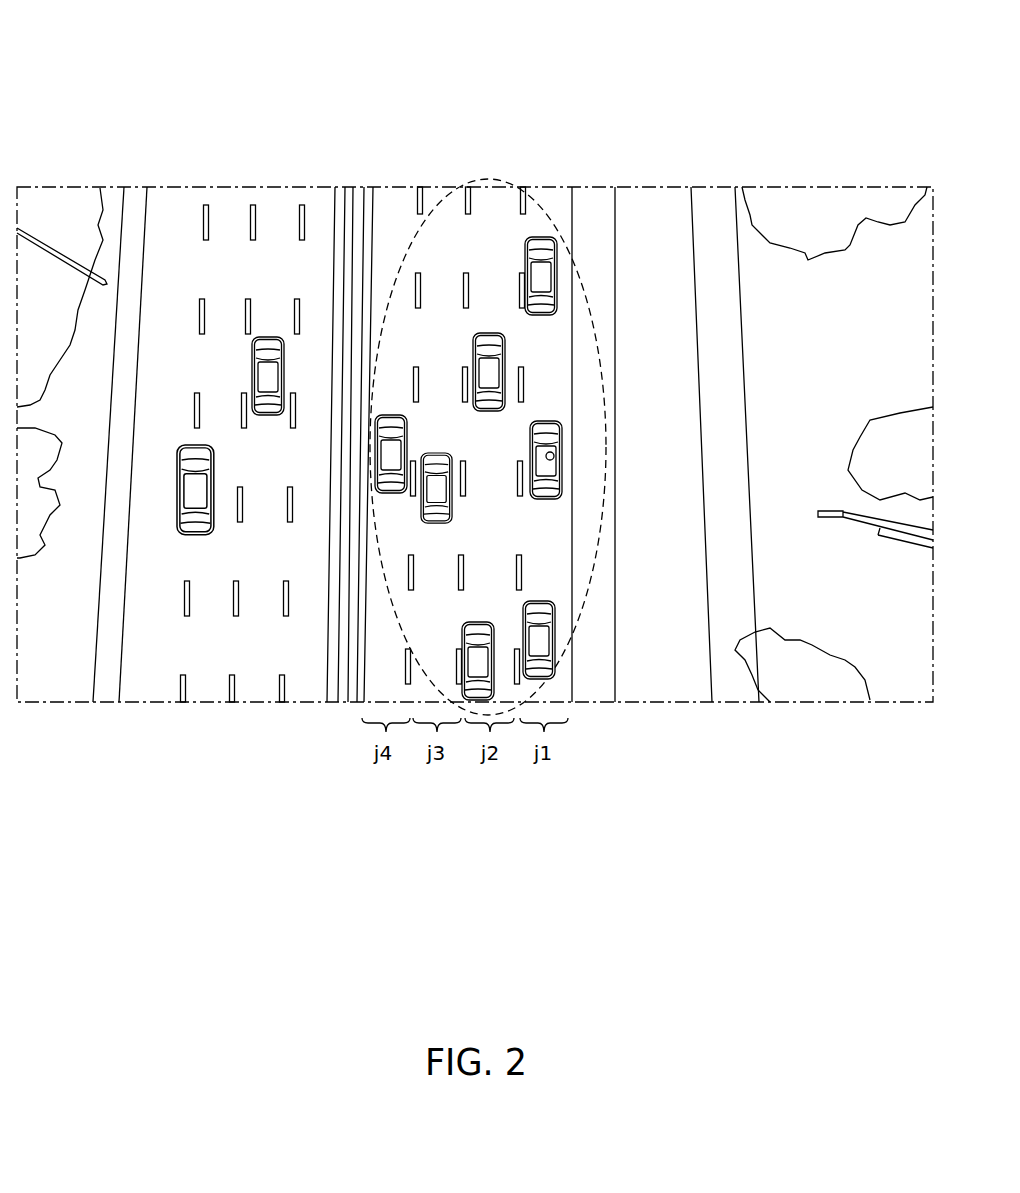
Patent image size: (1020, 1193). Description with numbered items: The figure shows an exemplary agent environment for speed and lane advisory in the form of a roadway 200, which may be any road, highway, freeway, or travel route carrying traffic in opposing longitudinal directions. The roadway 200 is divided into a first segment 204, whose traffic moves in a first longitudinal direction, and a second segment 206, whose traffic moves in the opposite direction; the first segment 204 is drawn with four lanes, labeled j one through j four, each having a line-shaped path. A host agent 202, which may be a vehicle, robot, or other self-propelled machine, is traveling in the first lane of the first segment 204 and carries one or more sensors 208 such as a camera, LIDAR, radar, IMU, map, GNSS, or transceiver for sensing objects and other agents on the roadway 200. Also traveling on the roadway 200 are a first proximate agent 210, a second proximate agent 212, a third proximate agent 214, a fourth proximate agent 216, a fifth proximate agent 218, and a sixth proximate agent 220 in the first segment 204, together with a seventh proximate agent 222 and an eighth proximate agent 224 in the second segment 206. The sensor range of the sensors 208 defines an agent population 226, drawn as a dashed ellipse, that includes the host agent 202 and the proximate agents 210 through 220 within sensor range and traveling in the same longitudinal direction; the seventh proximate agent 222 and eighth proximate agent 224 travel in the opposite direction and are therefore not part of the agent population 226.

The roadway 200 is at (197, 40).
The host agent 202 is at (555, 459).
The first segment 204 is at (372, 168).
The second segment 206 is at (147, 168).
The sensor 208 is at (551, 428).
The first proximate agent 210 is at (555, 633).
The second proximate agent 212 is at (506, 378).
The third proximate agent 214 is at (560, 272).
The fourth proximate agent 216 is at (467, 657).
The fifth proximate agent 218 is at (440, 522).
The sixth proximate agent 220 is at (388, 415).
The seventh proximate agent 222 is at (252, 377).
The eighth proximate agent 224 is at (200, 535).
The agent population 226 is at (568, 232).